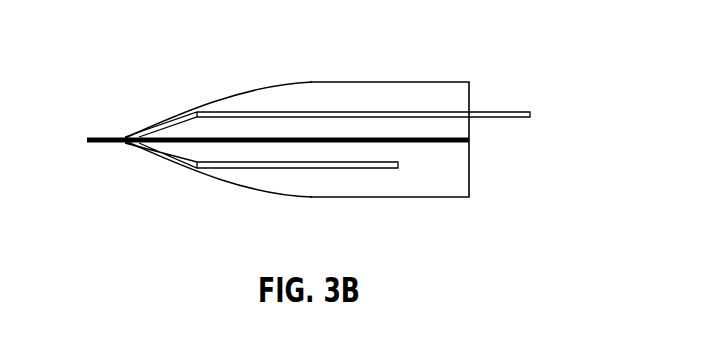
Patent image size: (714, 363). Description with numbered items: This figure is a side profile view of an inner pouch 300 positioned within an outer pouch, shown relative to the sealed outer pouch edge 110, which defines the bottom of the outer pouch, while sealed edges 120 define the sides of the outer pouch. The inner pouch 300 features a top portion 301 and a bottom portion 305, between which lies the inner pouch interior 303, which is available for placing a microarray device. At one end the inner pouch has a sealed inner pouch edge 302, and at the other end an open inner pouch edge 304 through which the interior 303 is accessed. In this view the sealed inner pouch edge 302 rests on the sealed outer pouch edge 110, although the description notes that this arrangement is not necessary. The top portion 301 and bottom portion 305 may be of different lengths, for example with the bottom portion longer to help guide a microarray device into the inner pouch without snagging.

The sealed outer pouch edge 110 is at (107, 136).
The sealed edges 120 is at (260, 120).
The inner pouch 300 is at (342, 121).
The top portion 301 is at (350, 111).
The sealed inner pouch edge 302 is at (165, 161).
The inner pouch interior 303 is at (459, 153).
The open inner pouch edge 304 is at (530, 114).
The bottom portion 305 is at (398, 166).